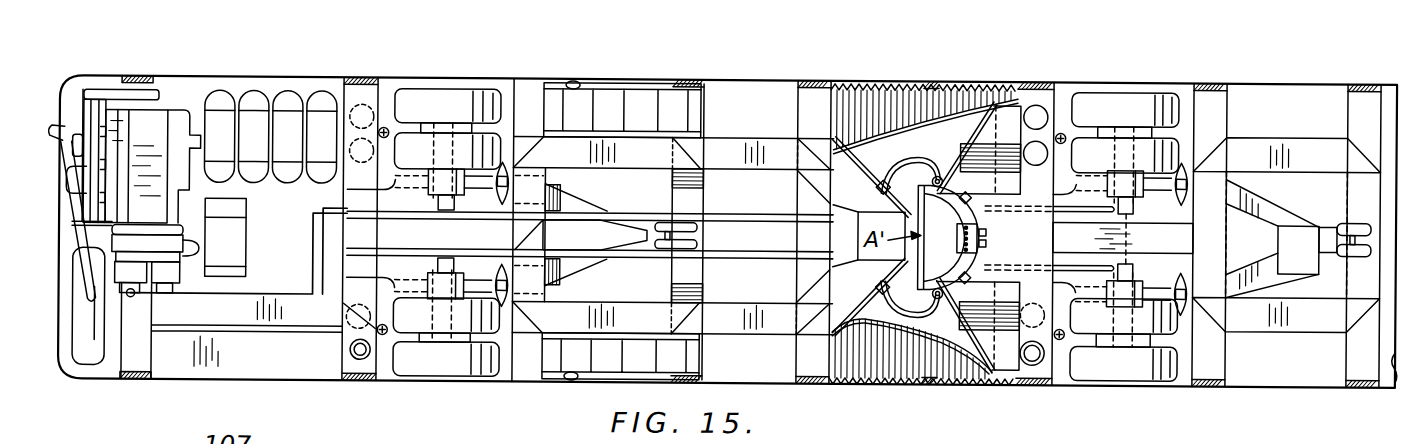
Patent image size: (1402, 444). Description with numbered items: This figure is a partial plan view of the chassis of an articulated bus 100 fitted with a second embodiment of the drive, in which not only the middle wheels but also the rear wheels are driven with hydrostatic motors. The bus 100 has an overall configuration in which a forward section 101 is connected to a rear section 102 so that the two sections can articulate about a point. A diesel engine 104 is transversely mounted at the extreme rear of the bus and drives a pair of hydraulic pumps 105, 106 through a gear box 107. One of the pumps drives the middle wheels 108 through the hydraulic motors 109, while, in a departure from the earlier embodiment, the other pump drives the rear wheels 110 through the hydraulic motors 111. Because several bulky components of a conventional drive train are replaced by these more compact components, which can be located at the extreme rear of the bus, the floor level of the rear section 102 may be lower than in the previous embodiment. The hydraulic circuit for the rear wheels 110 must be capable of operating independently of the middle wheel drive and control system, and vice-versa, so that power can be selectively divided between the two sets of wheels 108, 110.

The bus 100 is at (1285, 75).
The forward section 101 is at (1314, 385).
The rear section 102 is at (357, 388).
The diesel engine 104 is at (150, 132).
The hydraulic pump 105 is at (138, 273).
The hydraulic pump 106 is at (181, 275).
The gear box 107 is at (167, 244).
The middle wheels 108 is at (1108, 96).
The hydraulic motors 109 is at (1188, 174).
The rear wheels 110 is at (424, 100).
The hydraulic motors 111 is at (513, 172).